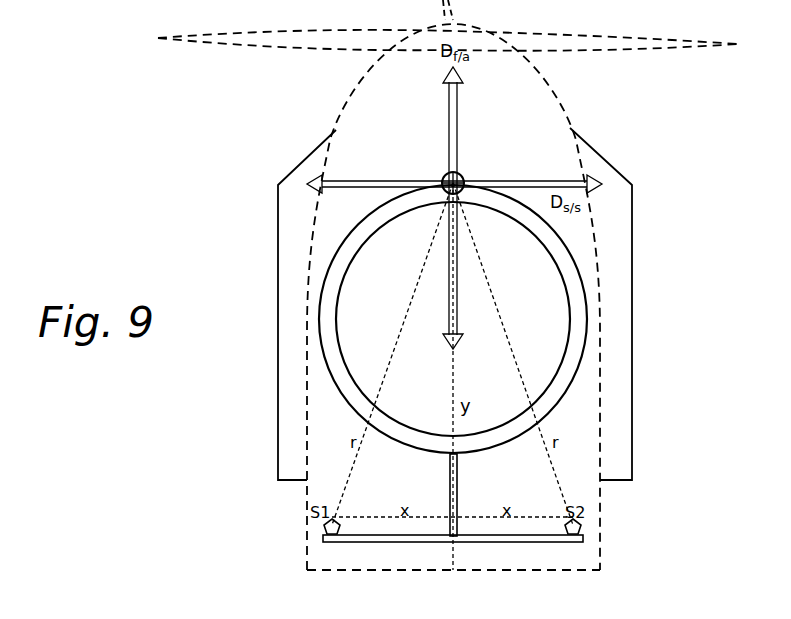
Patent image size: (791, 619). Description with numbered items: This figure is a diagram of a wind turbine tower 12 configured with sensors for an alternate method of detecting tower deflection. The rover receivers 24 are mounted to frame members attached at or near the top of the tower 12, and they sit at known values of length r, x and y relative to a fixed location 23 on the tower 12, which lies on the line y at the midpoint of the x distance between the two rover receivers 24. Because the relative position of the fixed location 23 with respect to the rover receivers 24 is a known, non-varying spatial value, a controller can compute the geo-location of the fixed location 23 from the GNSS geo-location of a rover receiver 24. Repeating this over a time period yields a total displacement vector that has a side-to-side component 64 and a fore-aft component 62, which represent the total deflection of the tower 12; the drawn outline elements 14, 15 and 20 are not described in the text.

The rotor blade 20 is at (630, 40).
The fuselage outline 14 is at (522, 118).
The airframe body 15 is at (632, 437).
The tower 12 is at (337, 274).
The fore-aft component 62 is at (448, 118).
The side-to-side component 64 is at (333, 181).
The fixed location 23 is at (465, 178).
The rover receivers 24 is at (323, 539).